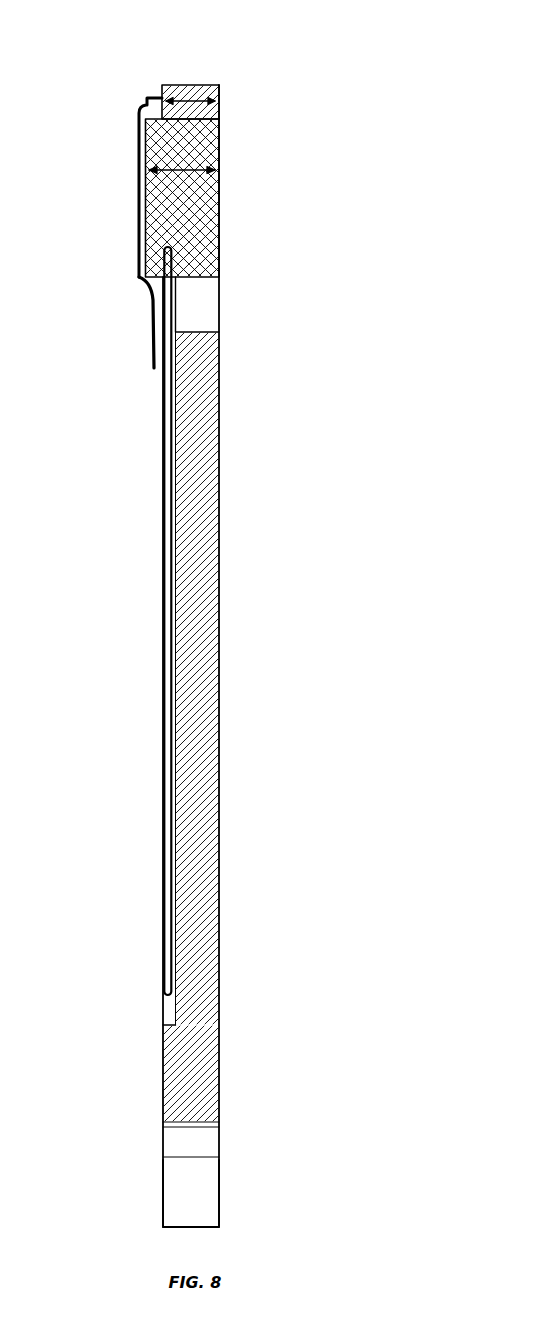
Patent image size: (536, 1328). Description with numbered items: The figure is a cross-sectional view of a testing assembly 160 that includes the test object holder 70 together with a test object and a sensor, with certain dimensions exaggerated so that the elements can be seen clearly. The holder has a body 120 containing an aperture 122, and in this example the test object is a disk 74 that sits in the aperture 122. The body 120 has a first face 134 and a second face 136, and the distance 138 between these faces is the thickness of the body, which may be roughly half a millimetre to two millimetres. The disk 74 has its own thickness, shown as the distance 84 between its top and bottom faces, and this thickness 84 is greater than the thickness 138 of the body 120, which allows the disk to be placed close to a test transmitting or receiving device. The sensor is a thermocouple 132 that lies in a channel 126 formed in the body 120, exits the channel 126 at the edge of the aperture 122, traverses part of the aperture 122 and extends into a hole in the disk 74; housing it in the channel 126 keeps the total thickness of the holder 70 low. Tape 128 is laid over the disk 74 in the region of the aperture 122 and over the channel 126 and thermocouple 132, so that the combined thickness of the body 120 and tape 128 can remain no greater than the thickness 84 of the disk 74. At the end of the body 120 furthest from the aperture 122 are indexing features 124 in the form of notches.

The test object holder 70 is at (88, 597).
The disk 74 is at (187, 230).
The distance between the first and second faces of the disk 84 is at (145, 150).
The body 120 is at (219, 697).
The aperture 122 is at (203, 313).
The indexing features 124 is at (188, 1198).
The channel 126 is at (170, 1006).
The tape 128 is at (137, 277).
The thermocouple 132 is at (175, 477).
The first face 134 is at (163, 1106).
The second face 136 is at (219, 1100).
The distance between the first and second faces of the body 138 is at (196, 90).
The testing assembly 160 is at (402, 168).